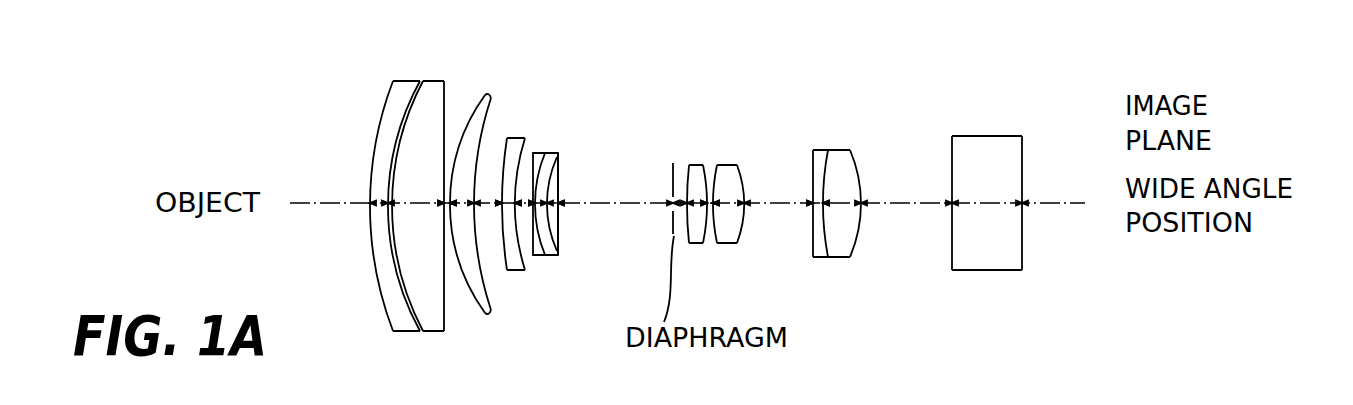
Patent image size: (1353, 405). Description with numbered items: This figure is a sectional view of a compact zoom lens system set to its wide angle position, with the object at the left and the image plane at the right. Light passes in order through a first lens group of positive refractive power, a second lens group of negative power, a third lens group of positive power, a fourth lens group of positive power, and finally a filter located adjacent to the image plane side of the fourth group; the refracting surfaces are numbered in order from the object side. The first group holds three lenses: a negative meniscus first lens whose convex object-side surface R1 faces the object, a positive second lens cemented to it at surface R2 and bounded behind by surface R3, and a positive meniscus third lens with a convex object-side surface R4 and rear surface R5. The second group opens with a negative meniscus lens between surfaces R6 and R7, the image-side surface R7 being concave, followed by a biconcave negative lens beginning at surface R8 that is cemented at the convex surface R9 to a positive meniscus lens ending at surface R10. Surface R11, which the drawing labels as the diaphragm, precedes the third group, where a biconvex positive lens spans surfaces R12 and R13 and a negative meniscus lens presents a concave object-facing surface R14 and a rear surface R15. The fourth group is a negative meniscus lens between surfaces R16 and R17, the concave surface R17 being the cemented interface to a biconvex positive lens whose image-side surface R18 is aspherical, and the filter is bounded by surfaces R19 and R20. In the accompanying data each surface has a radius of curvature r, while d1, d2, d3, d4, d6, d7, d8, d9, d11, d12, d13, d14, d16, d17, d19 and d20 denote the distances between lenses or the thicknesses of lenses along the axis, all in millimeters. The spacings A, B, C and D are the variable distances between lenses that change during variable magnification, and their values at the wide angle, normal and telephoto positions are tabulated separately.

The convex object-side surface of first lens R1 is at (377, 134).
The cemented surface of first and second lenses R2 is at (413, 112).
The third lens surface R3 is at (440, 82).
The convex object-side surface of third lens R4 is at (482, 108).
The fifth lens surface R5 is at (492, 108).
The sixth lens surface R6 is at (507, 138).
The concave image-side surface of first lens of second lens group R7 is at (527, 138).
The eighth lens surface R8 is at (546, 153).
The convex cemented surface of third lens of second lens group R9 is at (558, 156).
The tenth lens surface R10 is at (559, 180).
The diaphragm surface R11 is at (672, 173).
The twelfth lens surface R12 is at (688, 165).
The thirteenth lens surface R13 is at (701, 165).
The concave object-side surface of second lens of third lens group R14 is at (716, 165).
The fifteenth lens surface R15 is at (741, 186).
The sixteenth lens surface R16 is at (813, 165).
The concave cemented surface of fourth lens group R17 is at (826, 150).
The aspherical image-side surface of second lens of fourth lens group R18 is at (851, 152).
The filter front surface R19 is at (952, 167).
The filter rear surface R20 is at (1022, 160).
The axial thickness d1 is at (370, 210).
The axial thickness d2 is at (421, 209).
The axial air gap d3 is at (446, 209).
The axial thickness d4 is at (492, 209).
The axial thickness d6 is at (505, 209).
The axial air gap d7 is at (522, 209).
The axial thickness d8 is at (541, 209).
The axial thickness d9 is at (553, 209).
The axial air gap d11 is at (672, 222).
The axial thickness d12 is at (696, 209).
The axial air gap d13 is at (714, 209).
The axial thickness d14 is at (729, 209).
The axial thickness d16 is at (818, 209).
The axial thickness d17 is at (842, 209).
The filter thickness d19 is at (994, 209).
The back focal distance d20 is at (1043, 209).
The variable distance A is at (400, 193).
The variable distance B is at (566, 197).
The variable distance C is at (710, 179).
The variable distance D is at (837, 192).